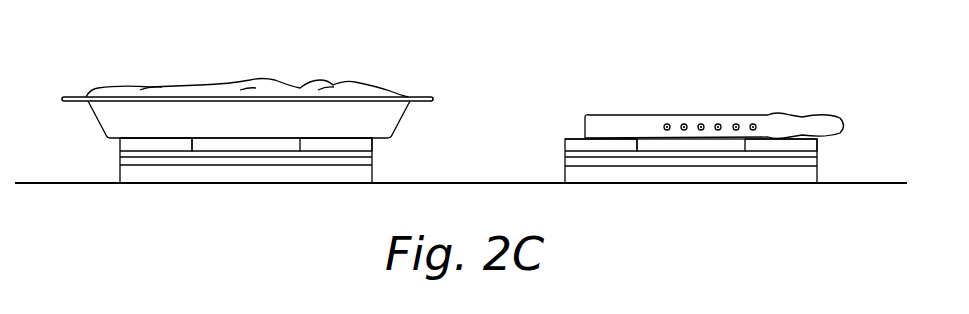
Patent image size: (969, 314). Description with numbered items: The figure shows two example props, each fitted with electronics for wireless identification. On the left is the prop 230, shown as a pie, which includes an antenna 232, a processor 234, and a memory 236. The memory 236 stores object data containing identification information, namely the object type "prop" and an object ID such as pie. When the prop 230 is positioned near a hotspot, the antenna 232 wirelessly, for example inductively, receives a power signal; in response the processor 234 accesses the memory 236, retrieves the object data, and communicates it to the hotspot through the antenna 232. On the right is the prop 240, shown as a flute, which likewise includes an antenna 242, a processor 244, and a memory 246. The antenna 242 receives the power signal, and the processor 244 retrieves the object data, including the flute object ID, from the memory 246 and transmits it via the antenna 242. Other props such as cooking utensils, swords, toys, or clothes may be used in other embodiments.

The prop 230 is at (264, 81).
The antenna 232 is at (264, 162).
The processor 234 is at (128, 147).
The memory 236 is at (370, 143).
The prop 240 is at (650, 113).
The antenna 242 is at (701, 163).
The processor 244 is at (572, 148).
The memory 246 is at (808, 146).